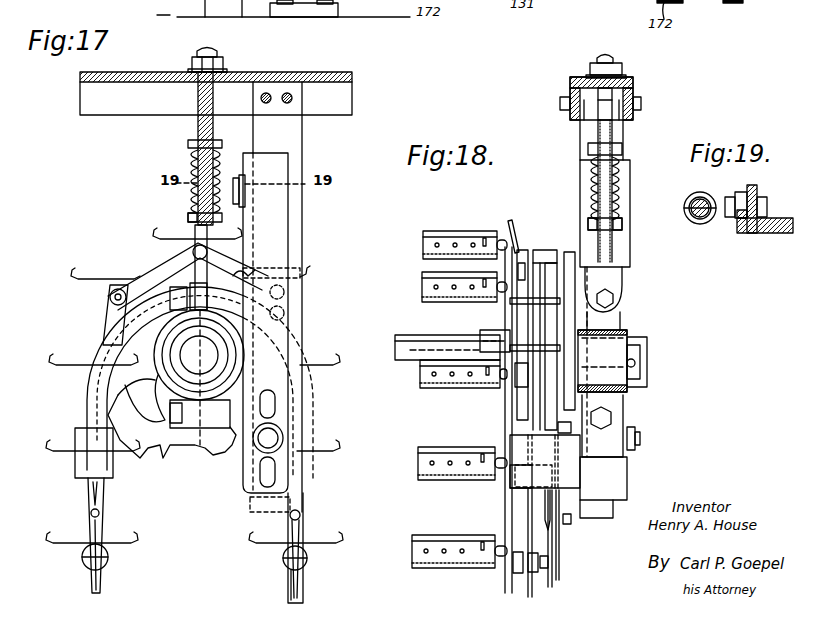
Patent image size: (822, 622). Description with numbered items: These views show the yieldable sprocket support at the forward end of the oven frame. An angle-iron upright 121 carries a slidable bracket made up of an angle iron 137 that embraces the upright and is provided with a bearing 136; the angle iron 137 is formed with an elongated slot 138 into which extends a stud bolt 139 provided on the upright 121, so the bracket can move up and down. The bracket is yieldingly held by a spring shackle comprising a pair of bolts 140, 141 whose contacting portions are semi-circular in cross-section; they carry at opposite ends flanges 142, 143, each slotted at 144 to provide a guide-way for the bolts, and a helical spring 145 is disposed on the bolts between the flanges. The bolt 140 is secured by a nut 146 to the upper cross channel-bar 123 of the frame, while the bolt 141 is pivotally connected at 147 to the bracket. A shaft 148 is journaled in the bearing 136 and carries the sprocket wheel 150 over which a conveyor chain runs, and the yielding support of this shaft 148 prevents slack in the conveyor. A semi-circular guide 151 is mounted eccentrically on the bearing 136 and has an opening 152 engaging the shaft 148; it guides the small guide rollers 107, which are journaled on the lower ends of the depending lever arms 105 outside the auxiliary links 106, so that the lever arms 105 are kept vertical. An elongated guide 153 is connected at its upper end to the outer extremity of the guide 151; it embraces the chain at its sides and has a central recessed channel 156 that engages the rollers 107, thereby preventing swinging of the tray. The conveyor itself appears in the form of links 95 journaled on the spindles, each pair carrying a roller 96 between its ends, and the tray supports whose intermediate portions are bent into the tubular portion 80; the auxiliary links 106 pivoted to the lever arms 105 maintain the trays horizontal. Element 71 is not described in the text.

In FIG. 17, the rail 71 is at (317, 540).
In FIG. 18, the rail 71 is at (450, 232).
In FIG. 18, the tubular portion of the tray support 80 is at (422, 257).
In FIG. 17, the links 95 is at (290, 582).
In FIG. 18, the links 95 is at (533, 510).
In FIG. 17, the roller 96 is at (285, 557).
In FIG. 18, the roller 96 is at (511, 226).
In FIG. 18, the lever arms 105 is at (552, 253).
In FIG. 17, the auxiliary links 106 is at (303, 576).
In FIG. 18, the auxiliary links 106 is at (547, 502).
In FIG. 17, the guide rollers 107 is at (300, 515).
In FIG. 18, the guide rollers 107 is at (564, 533).
In FIG. 17, the upright 121 is at (288, 138).
In FIG. 18, the upright 121 is at (585, 130).
In FIG. 19, the upright 121 is at (755, 193).
In FIG. 17, the cross channel-bar 123 is at (352, 78).
In FIG. 18, the cross channel-bar 123 is at (572, 86).
In FIG. 17, the bearing 136 is at (248, 273).
In FIG. 18, the bearing 136 is at (600, 352).
In FIG. 17, the angle iron 137 is at (262, 220).
In FIG. 18, the angle iron 137 is at (605, 308).
In FIG. 19, the angle iron 137 is at (767, 235).
In FIG. 17, the elongated slot 138 is at (272, 407).
In FIG. 18, the elongated slot 138 is at (603, 477).
In FIG. 19, the elongated slot 138 is at (738, 213).
In FIG. 17, the stud bolt 139 is at (240, 185).
In FIG. 18, the stud bolt 139 is at (633, 437).
In FIG. 19, the stud bolt 139 is at (730, 215).
In FIG. 17, the bolt 140 is at (197, 118).
In FIG. 18, the bolt 140 is at (611, 117).
In FIG. 19, the bolt 140 is at (715, 193).
In FIG. 17, the bolt 141 is at (195, 230).
In FIG. 18, the bolt 141 is at (646, 230).
In FIG. 19, the bolt 141 is at (685, 213).
In FIG. 17, the flange 142 is at (196, 213).
In FIG. 18, the flange 142 is at (621, 227).
In FIG. 17, the flange 143 is at (188, 143).
In FIG. 18, the flange 143 is at (622, 150).
In FIG. 17, the slot 144 is at (190, 213).
In FIG. 18, the slot 144 is at (603, 248).
In FIG. 19, the slot 144 is at (687, 212).
In FIG. 17, the helical spring 145 is at (190, 170).
In FIG. 18, the helical spring 145 is at (592, 190).
In FIG. 17, the nut 146 is at (223, 64).
In FIG. 18, the nut 146 is at (621, 70).
In FIG. 17, the pivotal connection 147 is at (173, 283).
In FIG. 18, the pivotal connection 147 is at (604, 251).
In FIG. 17, the shaft 148 is at (203, 358).
In FIG. 18, the shaft 148 is at (412, 383).
In FIG. 17, the sprocket wheel 150 is at (165, 447).
In FIG. 18, the sprocket wheel 150 is at (518, 335).
In FIG. 17, the semi-circular guide 151 is at (110, 323).
In FIG. 18, the semi-circular guide 151 is at (568, 283).
In FIG. 17, the opening 152 is at (202, 445).
In FIG. 17, the elongated guide 153 is at (67, 468).
In FIG. 18, the elongated guide 153 is at (567, 520).
In FIG. 17, the recessed channel 156 is at (95, 463).